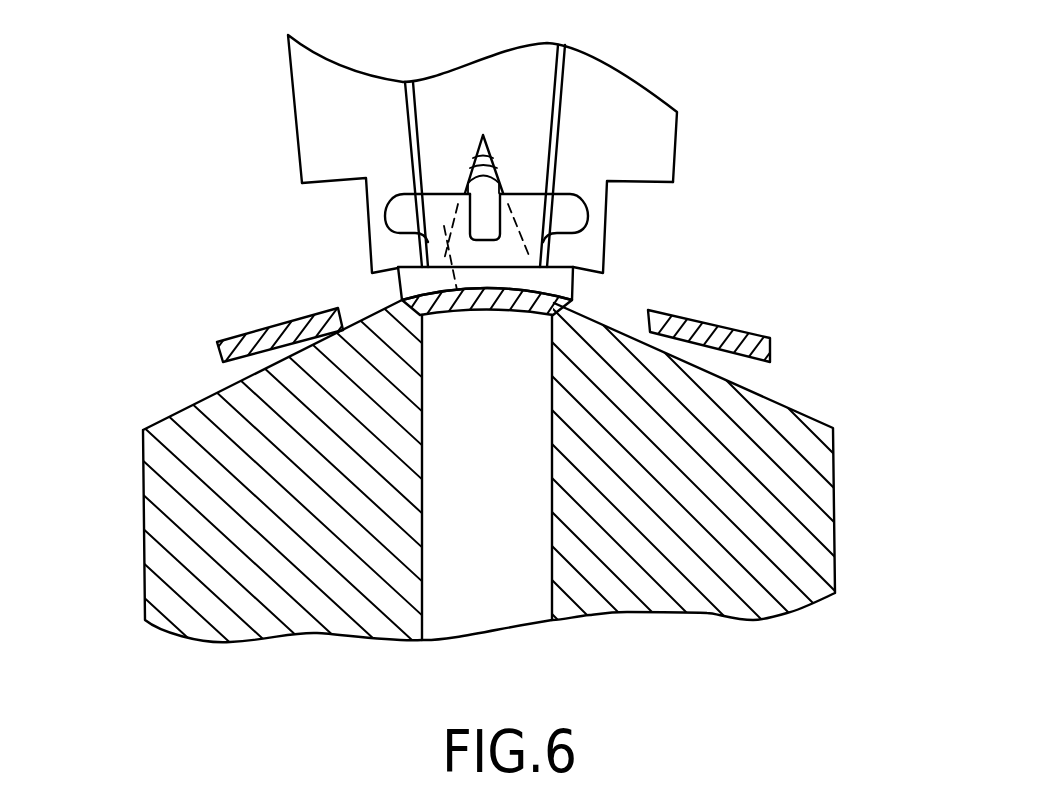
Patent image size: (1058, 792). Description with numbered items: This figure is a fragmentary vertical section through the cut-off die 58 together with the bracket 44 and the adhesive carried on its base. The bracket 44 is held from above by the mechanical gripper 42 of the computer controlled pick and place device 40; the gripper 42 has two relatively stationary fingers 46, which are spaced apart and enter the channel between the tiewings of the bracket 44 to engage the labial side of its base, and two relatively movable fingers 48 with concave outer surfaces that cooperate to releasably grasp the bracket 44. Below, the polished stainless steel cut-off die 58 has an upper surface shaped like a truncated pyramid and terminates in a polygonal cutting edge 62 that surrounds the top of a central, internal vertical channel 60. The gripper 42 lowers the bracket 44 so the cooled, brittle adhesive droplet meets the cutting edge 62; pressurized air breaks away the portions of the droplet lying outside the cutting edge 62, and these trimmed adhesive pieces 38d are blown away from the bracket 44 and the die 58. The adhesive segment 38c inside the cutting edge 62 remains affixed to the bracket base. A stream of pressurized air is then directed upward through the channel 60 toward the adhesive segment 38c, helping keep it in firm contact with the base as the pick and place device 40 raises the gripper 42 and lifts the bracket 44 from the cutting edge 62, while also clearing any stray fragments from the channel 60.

The mechanical gripper 42 is at (645, 73).
The pick and place device 40 is at (388, 255).
The relatively stationary fingers 46 is at (588, 254).
The bracket 44 is at (578, 218).
The relatively movable fingers 48 is at (458, 284).
The adhesive segment 38c is at (494, 316).
The adhesive pieces 38d is at (292, 320).
The cut-off die 58 is at (142, 508).
The channel 60 is at (480, 592).
The cutting edge 62 is at (837, 468).